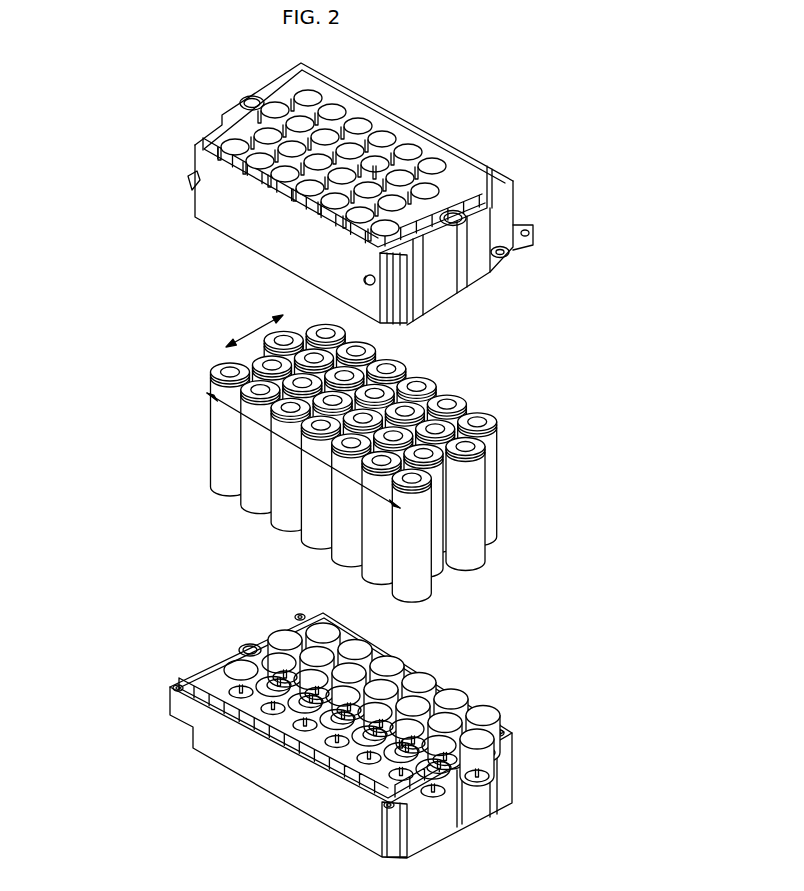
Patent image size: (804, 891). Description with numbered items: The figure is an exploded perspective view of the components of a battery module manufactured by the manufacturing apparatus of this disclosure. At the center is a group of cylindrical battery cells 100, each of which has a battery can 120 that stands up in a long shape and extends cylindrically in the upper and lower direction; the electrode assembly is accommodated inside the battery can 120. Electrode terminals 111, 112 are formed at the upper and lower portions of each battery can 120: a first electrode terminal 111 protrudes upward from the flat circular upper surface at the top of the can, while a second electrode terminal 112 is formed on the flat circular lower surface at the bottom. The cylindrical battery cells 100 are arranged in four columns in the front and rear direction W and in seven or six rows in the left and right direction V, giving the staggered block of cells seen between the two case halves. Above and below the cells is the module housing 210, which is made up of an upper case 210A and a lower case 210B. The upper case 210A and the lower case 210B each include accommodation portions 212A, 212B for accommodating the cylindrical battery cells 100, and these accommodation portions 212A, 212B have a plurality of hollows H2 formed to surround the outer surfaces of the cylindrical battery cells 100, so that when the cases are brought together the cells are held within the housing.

The cylindrical battery cell 100 is at (398, 462).
The battery can 120 is at (379, 462).
The first electrode terminal 111 is at (477, 422).
The second electrode terminal 112 is at (458, 576).
The module housing 210 is at (87, 199).
The upper case 210A is at (311, 194).
The lower case 210B is at (301, 712).
The accommodation portion 212A is at (390, 182).
The accommodation portion 212B is at (400, 747).
The hollow H2 is at (307, 690).
The front and rear direction W is at (254, 329).
The left and right direction V is at (303, 450).